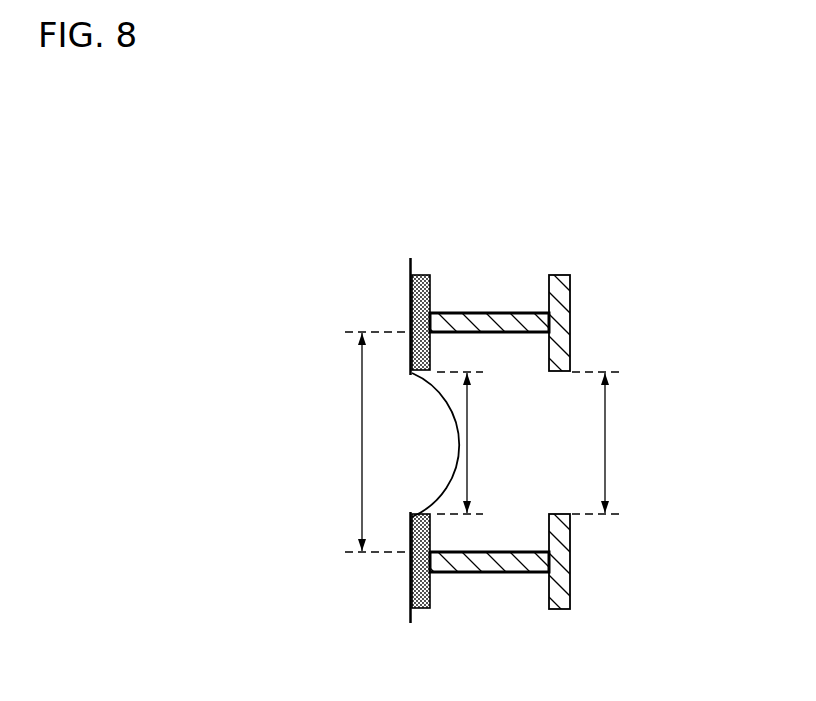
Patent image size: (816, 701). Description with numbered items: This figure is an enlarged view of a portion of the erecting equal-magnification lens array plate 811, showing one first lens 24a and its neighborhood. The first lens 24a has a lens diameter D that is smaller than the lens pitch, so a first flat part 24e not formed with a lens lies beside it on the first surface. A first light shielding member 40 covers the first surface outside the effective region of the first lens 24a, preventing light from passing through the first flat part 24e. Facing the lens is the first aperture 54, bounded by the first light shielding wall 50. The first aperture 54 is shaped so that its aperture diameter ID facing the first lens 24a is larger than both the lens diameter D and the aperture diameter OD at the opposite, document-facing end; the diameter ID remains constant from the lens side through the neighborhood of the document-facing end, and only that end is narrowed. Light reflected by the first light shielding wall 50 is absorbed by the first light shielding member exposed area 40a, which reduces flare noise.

The erecting equal-magnification lens array plate 811 is at (470, 219).
The first flat part 24e is at (410, 287).
The first light shielding member 40 is at (430, 293).
The first light shielding member exposed area 40a is at (430, 350).
The first light shielding wall 50 is at (570, 345).
The first lens 24a is at (455, 449).
The first aperture 54 is at (545, 481).